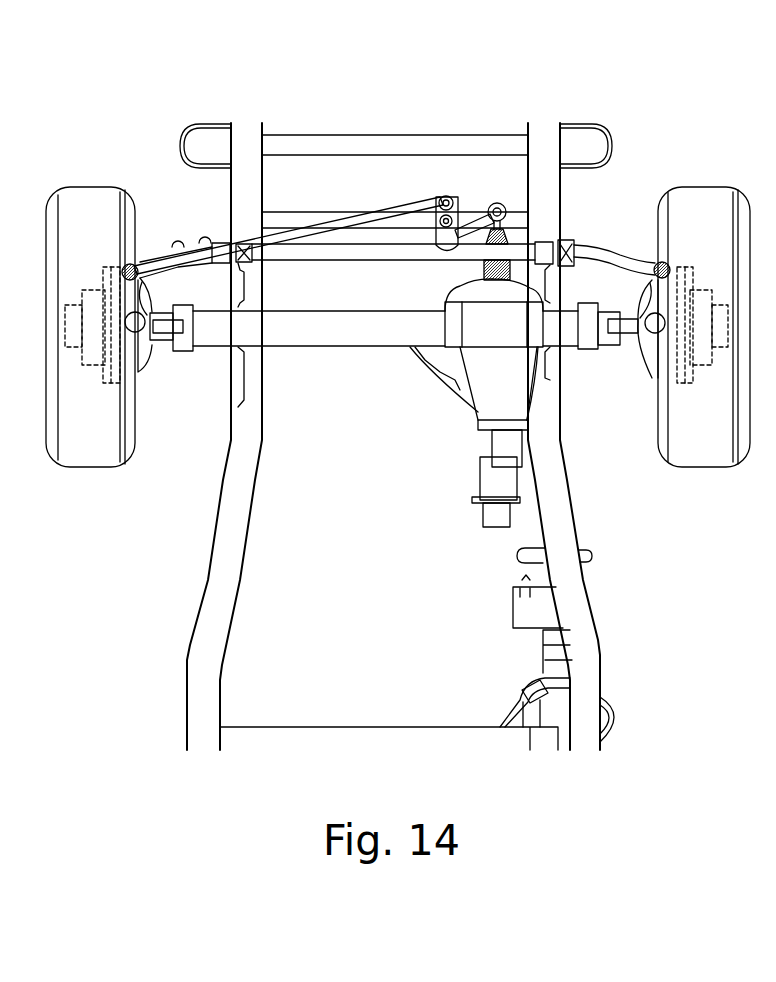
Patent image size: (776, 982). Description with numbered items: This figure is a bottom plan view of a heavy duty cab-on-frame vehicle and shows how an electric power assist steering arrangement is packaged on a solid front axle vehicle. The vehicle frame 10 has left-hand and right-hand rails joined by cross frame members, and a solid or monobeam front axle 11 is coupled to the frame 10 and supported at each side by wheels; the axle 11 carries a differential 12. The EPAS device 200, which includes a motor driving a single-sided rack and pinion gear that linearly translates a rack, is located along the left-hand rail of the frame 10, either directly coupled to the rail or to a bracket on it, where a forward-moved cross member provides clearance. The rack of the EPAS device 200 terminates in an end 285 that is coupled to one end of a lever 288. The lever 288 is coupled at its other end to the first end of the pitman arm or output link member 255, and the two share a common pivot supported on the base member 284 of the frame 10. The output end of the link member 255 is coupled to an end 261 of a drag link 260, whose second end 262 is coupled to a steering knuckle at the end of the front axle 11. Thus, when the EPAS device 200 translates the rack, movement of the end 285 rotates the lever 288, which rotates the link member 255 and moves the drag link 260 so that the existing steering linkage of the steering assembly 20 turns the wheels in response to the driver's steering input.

The vehicle frame 10 is at (242, 606).
The front axle 11 is at (321, 356).
The differential 12 is at (457, 386).
The steering assembly 20 is at (299, 116).
The EPAS device 200 is at (472, 480).
The pitman arm 255 is at (462, 226).
The drag link 260 is at (427, 188).
The end of drag link 261 is at (323, 263).
The second end of drag link 262 is at (138, 262).
The base member 284 is at (517, 237).
The end of rack 285 is at (506, 200).
The lever 288 is at (497, 201).